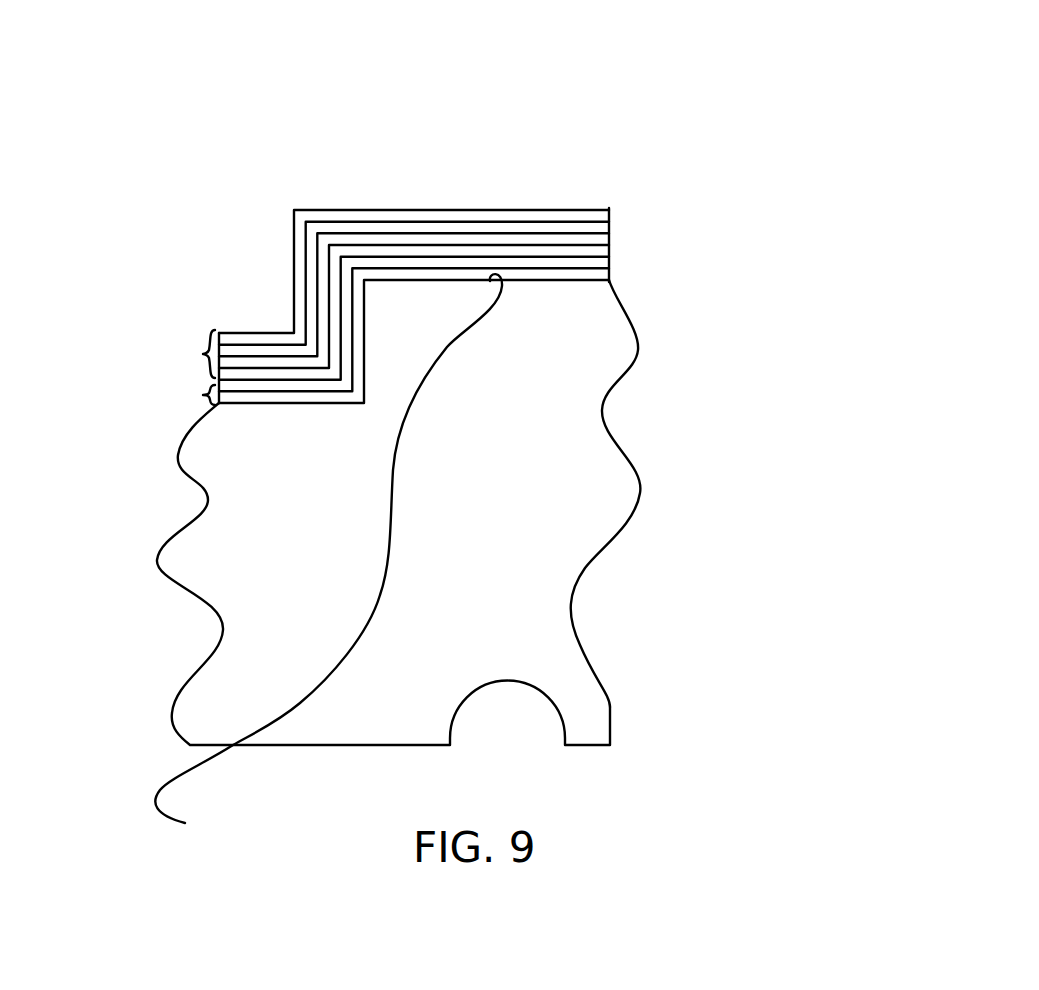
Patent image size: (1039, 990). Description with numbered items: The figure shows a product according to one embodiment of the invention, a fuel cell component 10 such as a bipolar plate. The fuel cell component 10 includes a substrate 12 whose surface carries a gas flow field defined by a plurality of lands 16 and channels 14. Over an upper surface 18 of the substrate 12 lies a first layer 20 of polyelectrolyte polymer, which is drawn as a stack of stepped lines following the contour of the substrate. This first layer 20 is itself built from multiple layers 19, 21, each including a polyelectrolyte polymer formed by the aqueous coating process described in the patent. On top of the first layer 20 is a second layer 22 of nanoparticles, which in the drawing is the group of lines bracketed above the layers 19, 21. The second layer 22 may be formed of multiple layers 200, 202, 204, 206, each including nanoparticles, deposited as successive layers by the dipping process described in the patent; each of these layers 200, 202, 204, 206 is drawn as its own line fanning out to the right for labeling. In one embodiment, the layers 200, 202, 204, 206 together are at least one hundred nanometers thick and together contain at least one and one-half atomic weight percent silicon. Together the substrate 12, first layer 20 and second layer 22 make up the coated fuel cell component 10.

The fuel cell component 10 is at (498, 180).
The substrate 12 is at (512, 627).
The channels 14 is at (539, 234).
The lands 16 is at (550, 425).
The upper surface 18 is at (328, 556).
The layer 19 is at (611, 268).
The first layer 20 is at (202, 394).
The layer 21 is at (611, 258).
The second layer 22 is at (200, 355).
The layer 200 is at (611, 248).
The layer 202 is at (611, 238).
The layer 204 is at (611, 227).
The layer 206 is at (611, 210).